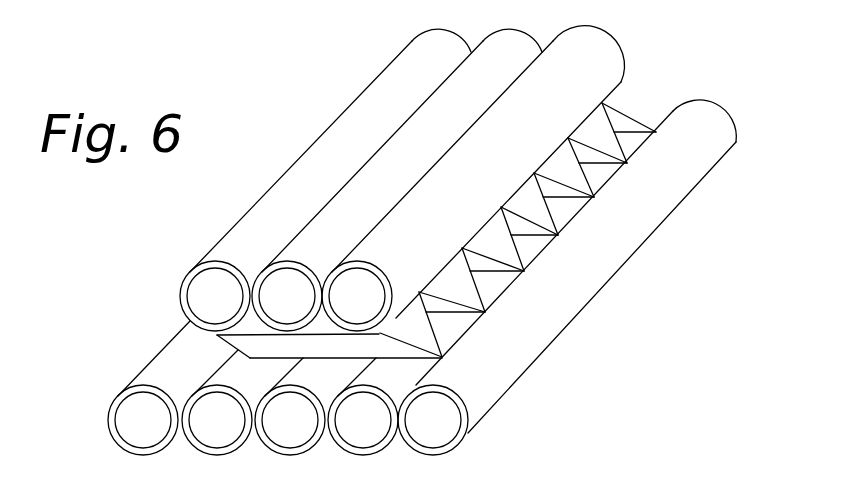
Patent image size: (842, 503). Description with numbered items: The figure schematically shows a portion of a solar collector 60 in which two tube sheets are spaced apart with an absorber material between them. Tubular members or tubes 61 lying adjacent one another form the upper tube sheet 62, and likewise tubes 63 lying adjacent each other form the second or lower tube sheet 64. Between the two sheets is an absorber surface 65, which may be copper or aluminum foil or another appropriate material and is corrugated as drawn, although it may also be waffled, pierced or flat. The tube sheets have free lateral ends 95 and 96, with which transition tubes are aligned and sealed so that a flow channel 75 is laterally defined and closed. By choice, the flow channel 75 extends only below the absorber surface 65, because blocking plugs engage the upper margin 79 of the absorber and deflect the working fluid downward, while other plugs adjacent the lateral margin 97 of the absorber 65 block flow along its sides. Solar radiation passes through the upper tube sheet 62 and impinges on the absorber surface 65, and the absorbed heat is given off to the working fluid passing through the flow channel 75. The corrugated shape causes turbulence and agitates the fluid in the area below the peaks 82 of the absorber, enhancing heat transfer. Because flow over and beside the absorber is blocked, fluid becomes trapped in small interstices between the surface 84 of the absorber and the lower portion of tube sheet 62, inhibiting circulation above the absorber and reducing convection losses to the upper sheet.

The collector 60 is at (303, 91).
The tubular members 61 is at (428, 176).
The tube sheet 62 is at (258, 215).
The tubular members 63 is at (200, 383).
The lower tube sheet 64 is at (646, 258).
The absorber surface 65 is at (495, 240).
The flow channel 75 is at (562, 213).
The upper margin 79 is at (317, 336).
The peaks 82 is at (533, 245).
The surface 84 is at (601, 126).
The free lateral end 95 is at (606, 57).
The free lateral end 96 is at (723, 135).
The lateral margin 97 is at (433, 332).